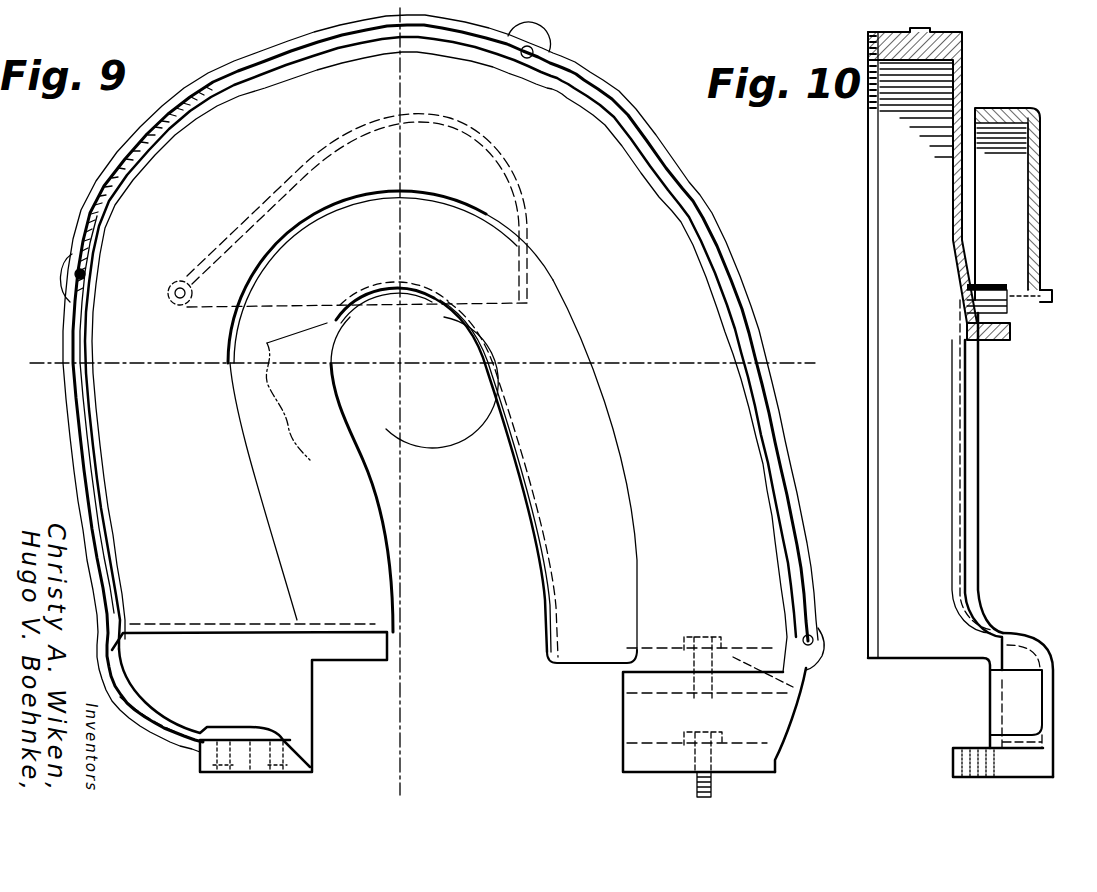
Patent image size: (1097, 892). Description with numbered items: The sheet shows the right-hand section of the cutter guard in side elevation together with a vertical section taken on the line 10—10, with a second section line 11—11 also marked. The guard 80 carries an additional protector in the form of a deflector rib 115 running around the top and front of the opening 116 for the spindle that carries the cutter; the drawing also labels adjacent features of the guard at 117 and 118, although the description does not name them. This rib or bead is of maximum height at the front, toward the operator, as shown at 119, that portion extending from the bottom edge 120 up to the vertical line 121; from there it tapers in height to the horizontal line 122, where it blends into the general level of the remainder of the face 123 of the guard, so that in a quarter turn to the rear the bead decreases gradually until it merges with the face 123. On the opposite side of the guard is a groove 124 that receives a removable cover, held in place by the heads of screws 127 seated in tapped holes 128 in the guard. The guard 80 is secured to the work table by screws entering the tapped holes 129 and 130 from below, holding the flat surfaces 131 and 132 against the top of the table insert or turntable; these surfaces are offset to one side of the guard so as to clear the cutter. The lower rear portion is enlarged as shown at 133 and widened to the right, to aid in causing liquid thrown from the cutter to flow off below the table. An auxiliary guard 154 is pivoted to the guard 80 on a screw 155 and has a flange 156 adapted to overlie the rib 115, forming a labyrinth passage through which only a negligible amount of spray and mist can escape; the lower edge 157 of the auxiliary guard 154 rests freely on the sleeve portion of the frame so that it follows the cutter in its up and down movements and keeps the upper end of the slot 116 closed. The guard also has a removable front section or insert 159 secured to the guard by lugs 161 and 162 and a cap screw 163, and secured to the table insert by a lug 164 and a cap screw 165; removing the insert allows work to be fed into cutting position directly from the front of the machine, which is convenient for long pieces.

In FIG. 9, the section line 10— 10 is at (398, 13).
In FIG. 9, the section line 11— 11 is at (817, 386).
In FIG. 9, the guard 80 is at (717, 157).
In FIG. 10, the guard 80 is at (963, 80).
In FIG. 9, the deflector rib 115 is at (420, 293).
In FIG. 10, the deflector rib 115 is at (987, 277).
In FIG. 9, the opening 116 is at (320, 460).
In FIG. 9, the left passage wall 117 is at (287, 477).
In FIG. 9, the arcuate partition wall 118 is at (306, 252).
In FIG. 9, the front portion of rib 119 is at (477, 351).
In FIG. 9, the bottom edge 120 is at (607, 662).
In FIG. 9, the vertical line 121 is at (398, 233).
In FIG. 9, the horizontal line 122 is at (267, 343).
In FIG. 9, the face of the guard 123 is at (104, 451).
In FIG. 9, the groove 124 is at (85, 333).
In FIG. 10, the groove 124 is at (870, 257).
In FIG. 9, the screw 127 is at (72, 266).
In FIG. 9, the tapped hole 128 is at (535, 50).
In FIG. 9, the tapped hole 129 is at (275, 742).
In FIG. 10, the tapped hole 129 is at (967, 778).
In FIG. 9, the tapped hole 130 is at (703, 722).
In FIG. 10, the tapped hole 130 is at (983, 778).
In FIG. 9, the flat surface 131 is at (263, 773).
In FIG. 10, the flat surface 131 is at (1037, 778).
In FIG. 9, the flat surface 132 is at (720, 773).
In FIG. 10, the enlarged lower rear portion 133 is at (1050, 627).
In FIG. 9, the auxiliary guard 154 is at (293, 180).
In FIG. 9, the screw 155 is at (180, 299).
In FIG. 10, the screw 155 is at (1044, 312).
In FIG. 10, the flange 156 is at (1030, 96).
In FIG. 9, the lower edge 157 is at (322, 285).
In FIG. 10, the lower edge 157 is at (1041, 200).
In FIG. 9, the removable front section or insert 159 is at (633, 713).
In FIG. 9, the lug 161 is at (795, 688).
In FIG. 9, the lug 162 is at (647, 680).
In FIG. 9, the cap screw 163 is at (712, 640).
In FIG. 9, the lug 164 is at (643, 757).
In FIG. 9, the cap screw 165 is at (770, 757).